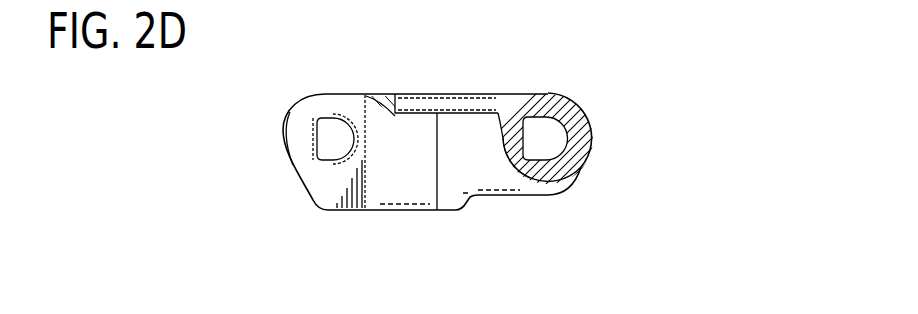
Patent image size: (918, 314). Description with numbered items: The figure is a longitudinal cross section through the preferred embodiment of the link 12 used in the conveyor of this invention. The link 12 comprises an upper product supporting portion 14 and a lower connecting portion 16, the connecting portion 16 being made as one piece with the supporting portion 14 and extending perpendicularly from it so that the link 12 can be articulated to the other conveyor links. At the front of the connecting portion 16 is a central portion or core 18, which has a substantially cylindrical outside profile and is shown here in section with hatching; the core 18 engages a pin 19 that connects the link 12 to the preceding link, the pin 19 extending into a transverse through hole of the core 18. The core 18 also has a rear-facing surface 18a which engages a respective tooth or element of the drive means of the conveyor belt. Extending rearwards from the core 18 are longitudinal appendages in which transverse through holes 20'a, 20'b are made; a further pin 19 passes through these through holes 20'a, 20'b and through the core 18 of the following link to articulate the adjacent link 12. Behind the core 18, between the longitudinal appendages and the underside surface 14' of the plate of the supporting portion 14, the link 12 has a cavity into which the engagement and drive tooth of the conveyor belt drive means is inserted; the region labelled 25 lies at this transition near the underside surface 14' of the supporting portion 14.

The link 12 is at (604, 167).
The upper product supporting portion 14 is at (415, 65).
The underside surface of the plate 14' is at (292, 144).
The lower connecting portion 16 is at (288, 199).
The core 18 is at (595, 99).
The rear-facing surface 18a is at (498, 143).
The pin 19 is at (566, 136).
The transverse through hole 20'a is at (233, 138).
The transverse through hole 20'b is at (335, 139).
The transition radius 25 is at (418, 156).